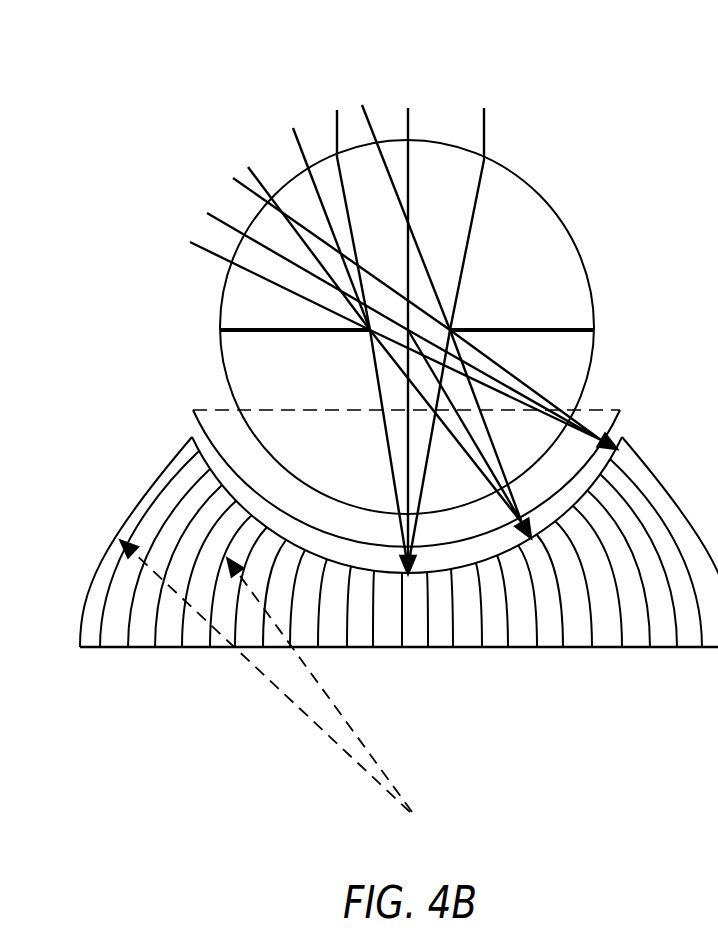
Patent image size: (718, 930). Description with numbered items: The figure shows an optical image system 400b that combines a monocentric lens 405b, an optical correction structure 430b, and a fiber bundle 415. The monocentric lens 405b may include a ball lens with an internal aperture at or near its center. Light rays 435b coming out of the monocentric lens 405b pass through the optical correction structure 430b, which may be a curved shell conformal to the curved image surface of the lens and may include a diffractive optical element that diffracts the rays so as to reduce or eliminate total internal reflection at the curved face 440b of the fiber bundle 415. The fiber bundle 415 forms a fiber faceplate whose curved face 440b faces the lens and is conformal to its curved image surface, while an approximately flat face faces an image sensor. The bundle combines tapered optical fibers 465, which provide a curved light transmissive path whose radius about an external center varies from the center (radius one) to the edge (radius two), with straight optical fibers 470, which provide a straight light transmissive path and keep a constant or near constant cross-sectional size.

The optical image system 400b is at (190, 130).
The monocentric lens 405b is at (553, 201).
The fiber bundle 415 is at (597, 648).
The optical correction structure 430b is at (553, 329).
The light rays 435b is at (485, 128).
The curved face 440b is at (192, 437).
The tapered optical fibers 465 is at (92, 568).
The straight optical fibers 470 is at (432, 632).